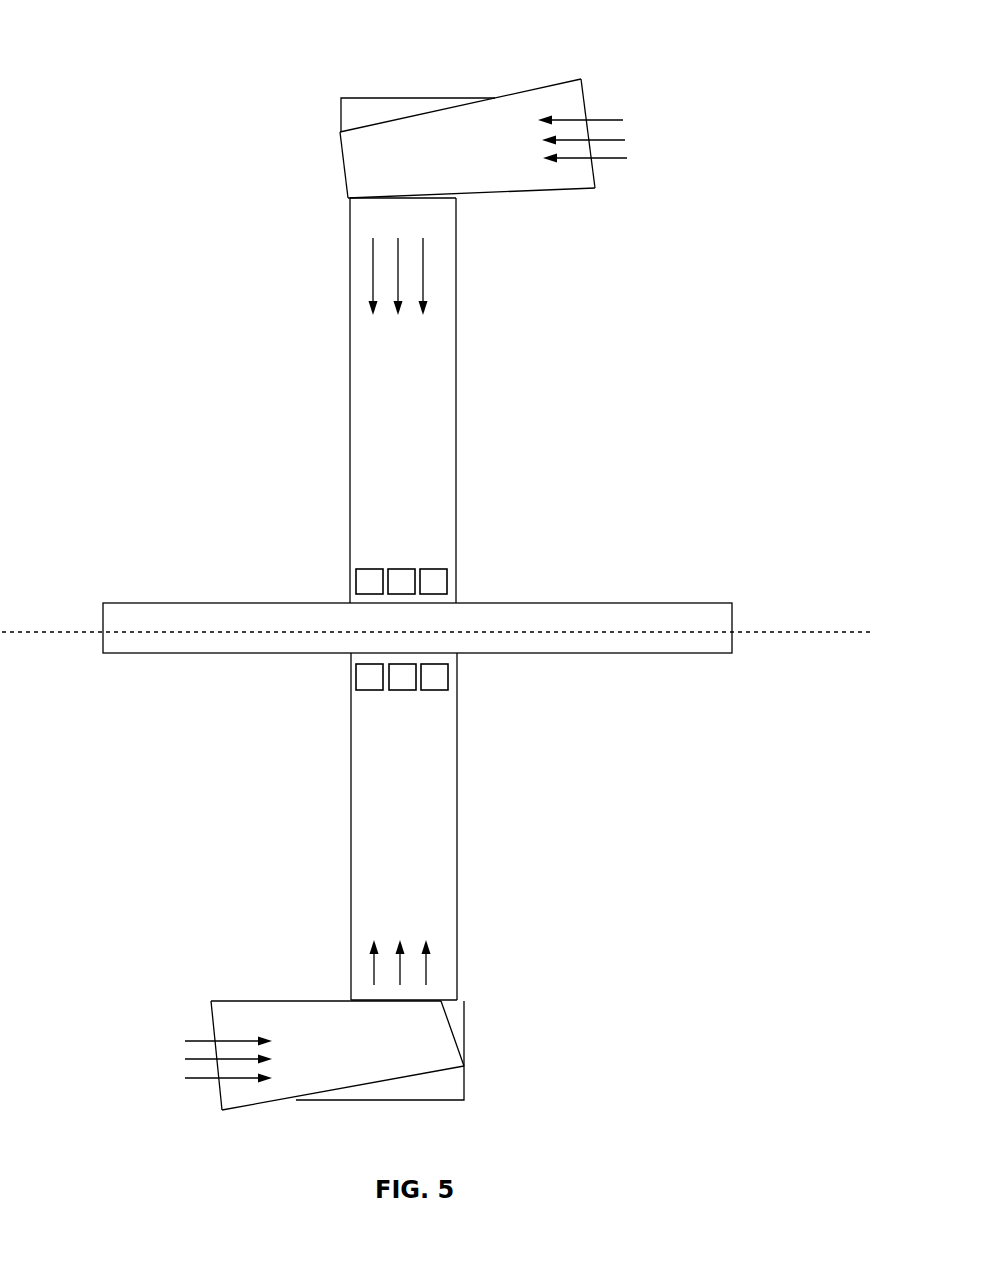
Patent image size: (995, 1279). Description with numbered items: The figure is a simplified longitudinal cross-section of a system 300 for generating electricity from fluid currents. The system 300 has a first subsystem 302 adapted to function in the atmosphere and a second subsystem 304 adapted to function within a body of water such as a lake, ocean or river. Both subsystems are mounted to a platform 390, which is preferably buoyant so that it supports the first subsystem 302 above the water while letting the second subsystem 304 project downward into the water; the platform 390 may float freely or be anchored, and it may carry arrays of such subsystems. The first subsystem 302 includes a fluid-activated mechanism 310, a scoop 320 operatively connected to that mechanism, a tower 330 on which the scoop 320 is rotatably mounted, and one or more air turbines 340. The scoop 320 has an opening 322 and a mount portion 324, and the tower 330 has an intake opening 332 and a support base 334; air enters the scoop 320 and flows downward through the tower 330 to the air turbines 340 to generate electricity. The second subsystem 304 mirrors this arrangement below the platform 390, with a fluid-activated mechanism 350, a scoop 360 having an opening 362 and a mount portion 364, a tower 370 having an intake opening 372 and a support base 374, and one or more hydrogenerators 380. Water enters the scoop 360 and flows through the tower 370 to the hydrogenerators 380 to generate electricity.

The system for generating electricity 300 is at (223, 533).
The first subsystem 302 is at (317, 322).
The second subsystem 304 is at (323, 840).
The fluid-activated mechanism 310 is at (403, 107).
The scoop 320 is at (508, 115).
The opening 322 is at (595, 173).
The mount portion 324 is at (377, 197).
The tower 330 is at (432, 362).
The intake opening 332 is at (423, 198).
The support base 334 is at (453, 408).
The air turbines 340 is at (373, 594).
The fluid-activated mechanism 350 is at (432, 1093).
The scoop 360 is at (447, 1031).
The opening 362 is at (212, 1022).
The mount portion 364 is at (440, 1002).
The tower 370 is at (428, 841).
The intake opening 372 is at (430, 999).
The support base 374 is at (457, 907).
The hydrogenerators 380 is at (368, 690).
The platform 390 is at (649, 603).